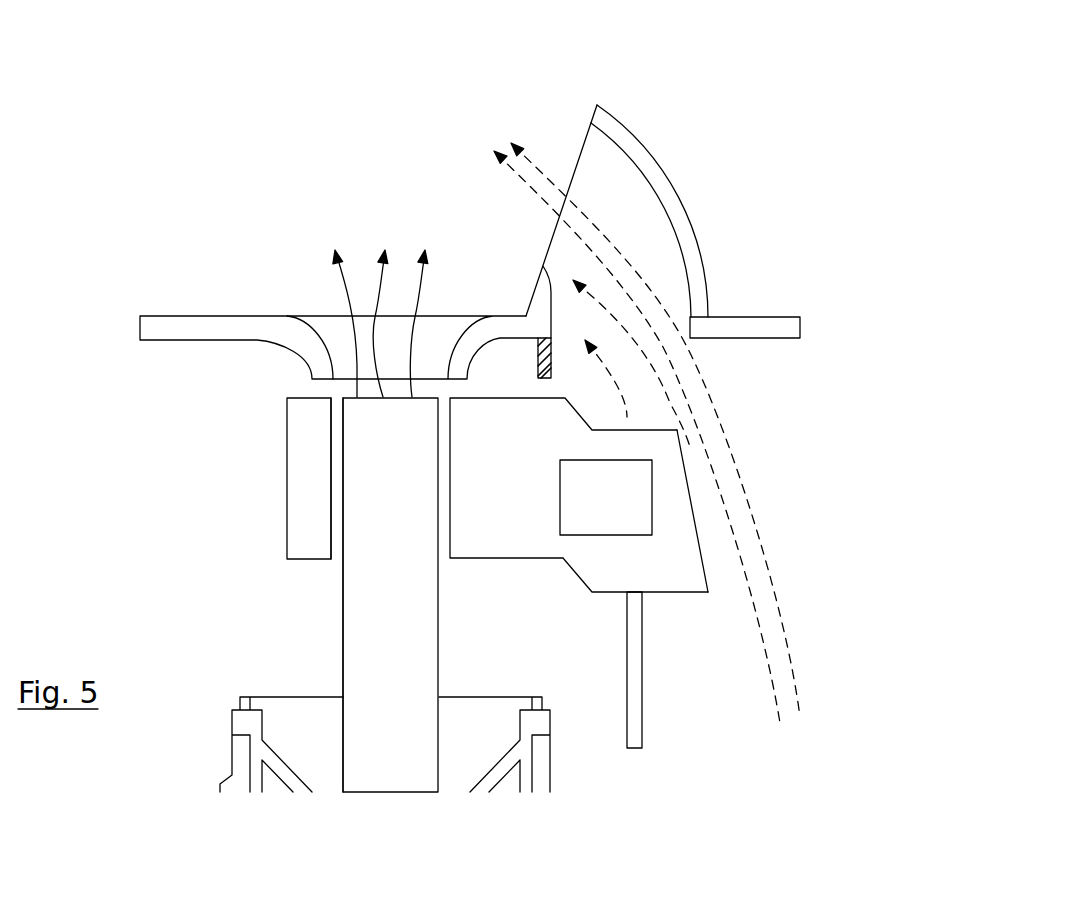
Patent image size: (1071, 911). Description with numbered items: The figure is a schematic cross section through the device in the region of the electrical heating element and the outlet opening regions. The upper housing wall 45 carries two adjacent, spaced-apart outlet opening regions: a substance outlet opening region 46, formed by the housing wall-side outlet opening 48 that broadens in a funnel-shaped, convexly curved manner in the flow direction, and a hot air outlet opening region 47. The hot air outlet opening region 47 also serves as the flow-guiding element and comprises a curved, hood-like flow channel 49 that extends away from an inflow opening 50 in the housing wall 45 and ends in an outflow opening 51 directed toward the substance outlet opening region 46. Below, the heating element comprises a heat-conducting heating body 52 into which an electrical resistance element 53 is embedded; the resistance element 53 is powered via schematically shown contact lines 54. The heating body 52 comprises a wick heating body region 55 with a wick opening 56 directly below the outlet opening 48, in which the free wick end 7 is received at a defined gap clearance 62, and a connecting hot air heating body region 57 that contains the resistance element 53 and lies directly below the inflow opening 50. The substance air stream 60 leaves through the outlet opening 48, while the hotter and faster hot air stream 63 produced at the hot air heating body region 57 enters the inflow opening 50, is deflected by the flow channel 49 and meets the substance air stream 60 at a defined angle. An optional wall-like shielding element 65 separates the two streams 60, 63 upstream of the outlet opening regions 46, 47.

The free wick end 7 is at (380, 680).
The upper housing wall 45 is at (773, 316).
The substance outlet opening region 46 is at (452, 303).
The hot air outlet opening region 47 is at (659, 275).
The outlet opening 48 is at (340, 337).
The flow channel 49 is at (655, 167).
The inflow opening 50 is at (567, 326).
The outflow opening 51 is at (580, 147).
The heating body 52 is at (516, 514).
The electrical resistance element 53 is at (624, 514).
The contact lines 54 is at (642, 728).
The wick heating body region 55 is at (303, 520).
The wick opening 56 is at (330, 455).
The hot air heating body region 57 is at (690, 578).
The substance air stream 60 is at (404, 268).
The gap clearance 62 is at (339, 563).
The hot air stream 63 is at (725, 480).
The shielding element 65 is at (551, 370).